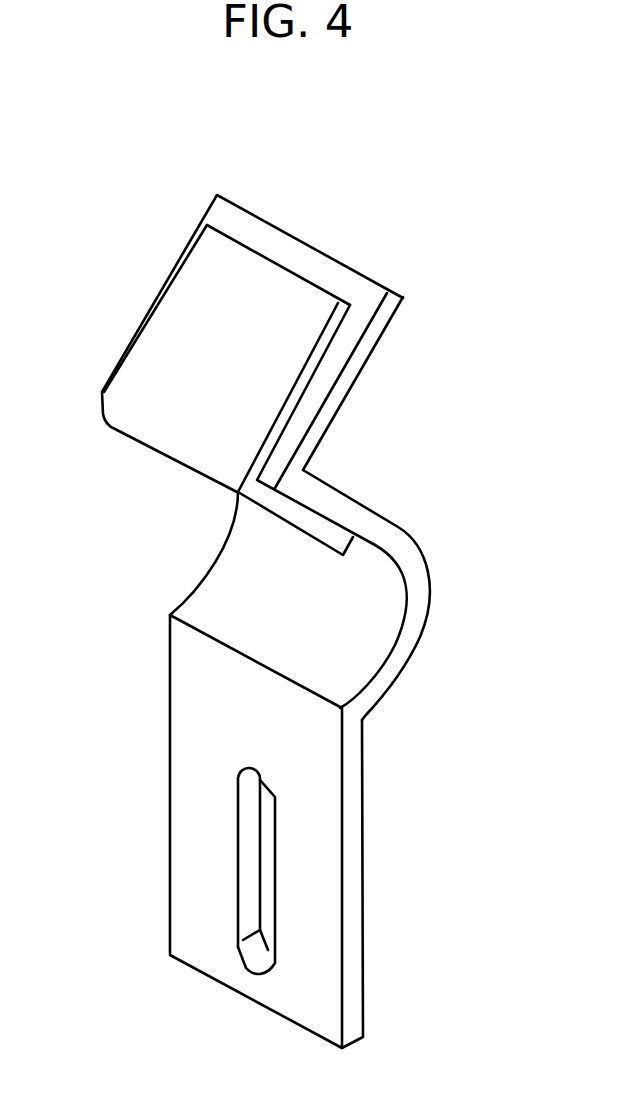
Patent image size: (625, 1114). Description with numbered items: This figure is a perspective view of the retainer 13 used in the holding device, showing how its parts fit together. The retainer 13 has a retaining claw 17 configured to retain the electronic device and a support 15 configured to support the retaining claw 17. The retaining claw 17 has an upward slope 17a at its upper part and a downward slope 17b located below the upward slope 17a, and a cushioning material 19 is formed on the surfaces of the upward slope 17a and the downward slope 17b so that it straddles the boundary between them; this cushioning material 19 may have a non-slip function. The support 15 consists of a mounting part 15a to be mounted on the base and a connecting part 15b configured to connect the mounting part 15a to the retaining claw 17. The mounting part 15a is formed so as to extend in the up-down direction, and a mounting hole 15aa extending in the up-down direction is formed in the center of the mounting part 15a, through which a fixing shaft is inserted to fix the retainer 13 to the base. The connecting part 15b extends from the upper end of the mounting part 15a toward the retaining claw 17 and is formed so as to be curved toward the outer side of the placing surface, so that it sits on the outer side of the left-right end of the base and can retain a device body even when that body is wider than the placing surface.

The retainer 13 is at (465, 171).
The support 15 is at (364, 843).
The mounting part 15a is at (320, 1002).
The mounting hole 15aa is at (238, 867).
The connecting part 15b is at (405, 643).
The retaining claw 17 is at (379, 428).
The upward slope 17a is at (358, 322).
The downward slope 17b is at (310, 512).
The cushioning material 19 is at (197, 322).